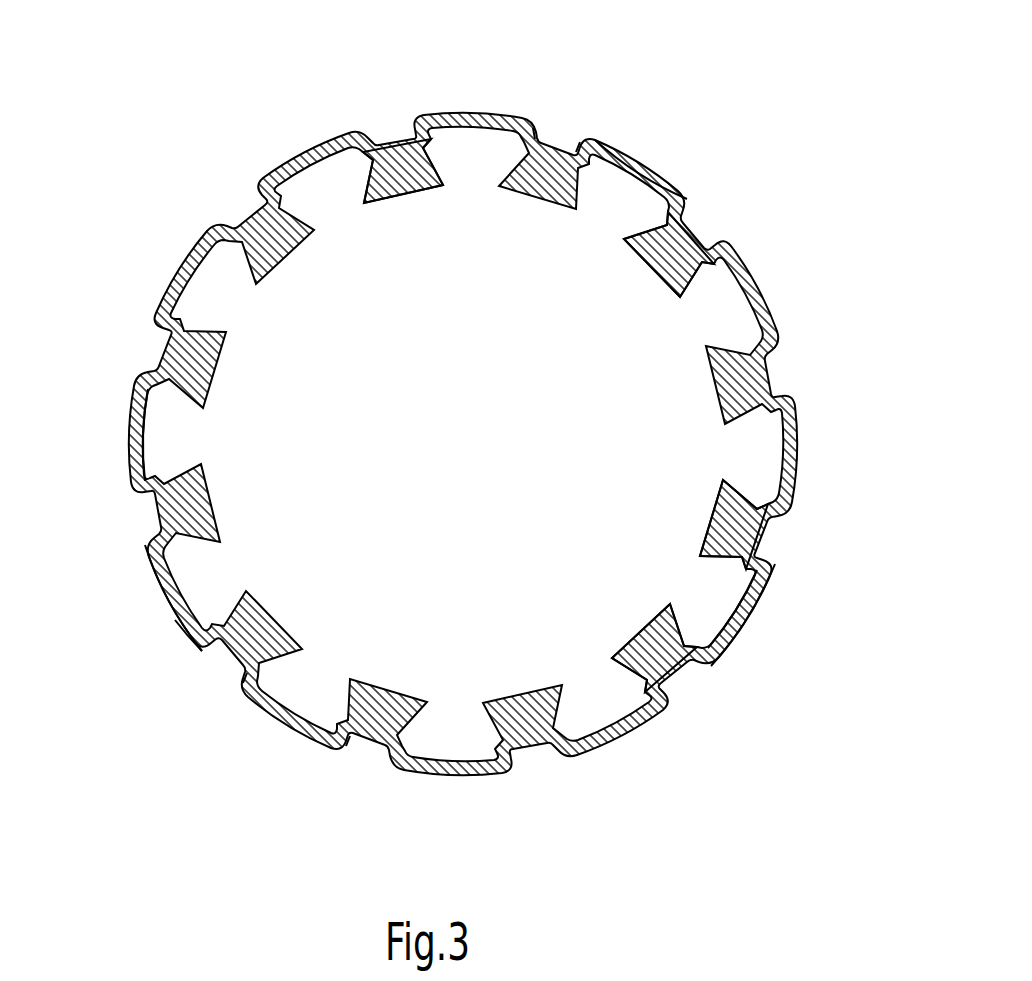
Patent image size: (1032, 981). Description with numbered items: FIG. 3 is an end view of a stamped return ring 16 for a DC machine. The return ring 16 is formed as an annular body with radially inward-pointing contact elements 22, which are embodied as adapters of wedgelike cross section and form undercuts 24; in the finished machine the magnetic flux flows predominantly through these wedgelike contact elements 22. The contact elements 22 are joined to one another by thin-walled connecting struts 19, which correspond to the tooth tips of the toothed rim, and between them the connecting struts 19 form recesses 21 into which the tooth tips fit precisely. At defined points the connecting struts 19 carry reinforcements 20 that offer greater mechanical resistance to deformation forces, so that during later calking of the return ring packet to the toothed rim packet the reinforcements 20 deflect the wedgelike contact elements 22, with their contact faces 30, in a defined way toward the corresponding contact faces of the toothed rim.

The return ring 16 is at (663, 123).
The connecting struts 19 is at (173, 603).
The reinforcements 20 is at (530, 125).
The recesses 21 is at (160, 434).
The contact elements 22 is at (663, 257).
The undercuts 24 is at (740, 493).
The contact faces 30 is at (361, 182).